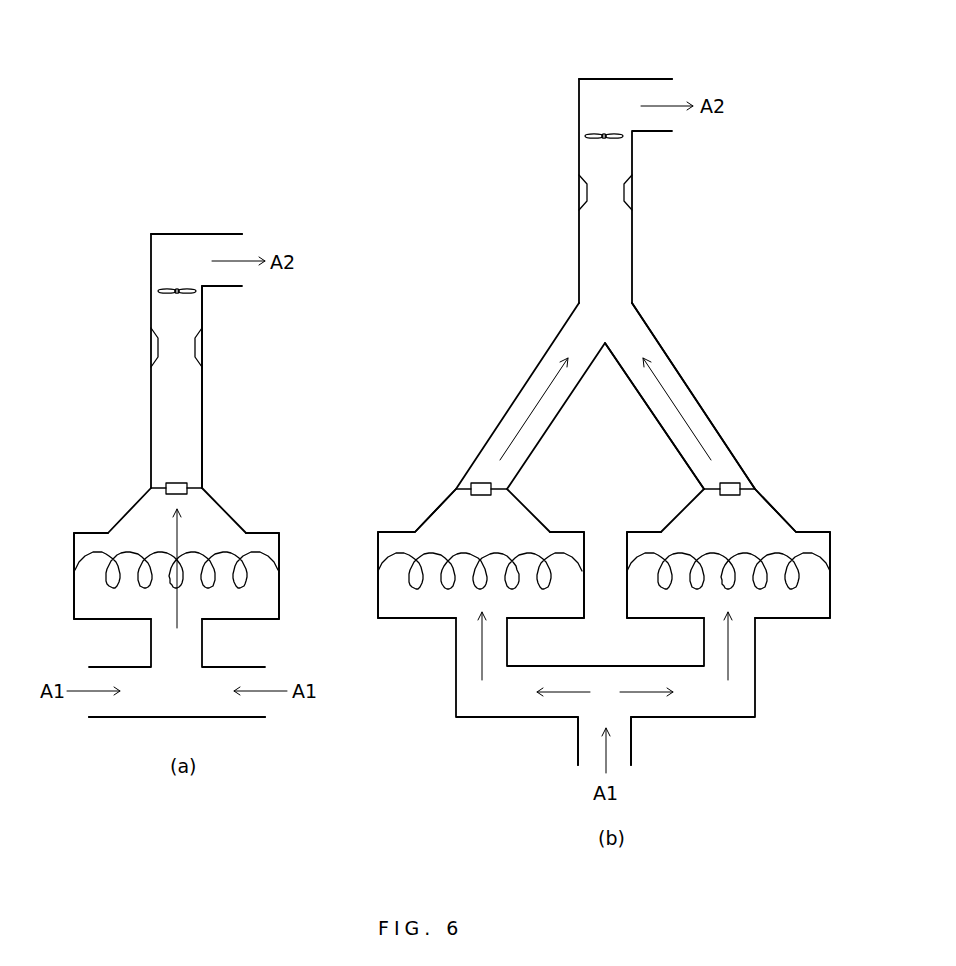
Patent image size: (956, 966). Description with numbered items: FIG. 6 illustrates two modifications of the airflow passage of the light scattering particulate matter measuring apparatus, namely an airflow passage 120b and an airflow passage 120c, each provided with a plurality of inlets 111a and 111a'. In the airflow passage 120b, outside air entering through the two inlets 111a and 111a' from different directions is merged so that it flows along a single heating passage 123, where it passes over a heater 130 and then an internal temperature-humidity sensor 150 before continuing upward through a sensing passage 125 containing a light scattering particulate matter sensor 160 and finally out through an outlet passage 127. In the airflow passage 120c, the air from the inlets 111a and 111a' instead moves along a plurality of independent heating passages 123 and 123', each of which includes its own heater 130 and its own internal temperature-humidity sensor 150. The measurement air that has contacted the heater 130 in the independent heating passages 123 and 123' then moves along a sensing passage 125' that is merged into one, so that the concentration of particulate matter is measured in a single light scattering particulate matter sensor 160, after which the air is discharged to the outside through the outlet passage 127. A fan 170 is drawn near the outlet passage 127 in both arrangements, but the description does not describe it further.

The airflow passage 120b is at (118, 190).
The airflow passage 120c is at (508, 112).
The outlet passage 127 is at (207, 233).
The fan 170 is at (158, 291).
The light scattering particulate matter sensor 160 is at (152, 346).
The sensing passage 125 is at (238, 387).
The sensing passage 125' is at (680, 395).
The internal temperature-humidity sensor 150 is at (175, 483).
The heater 130 is at (92, 552).
The heating passage 123 is at (452, 534).
The heating passage 123' is at (473, 534).
The inlet 111a is at (456, 744).
The inlet 111a' is at (128, 744).